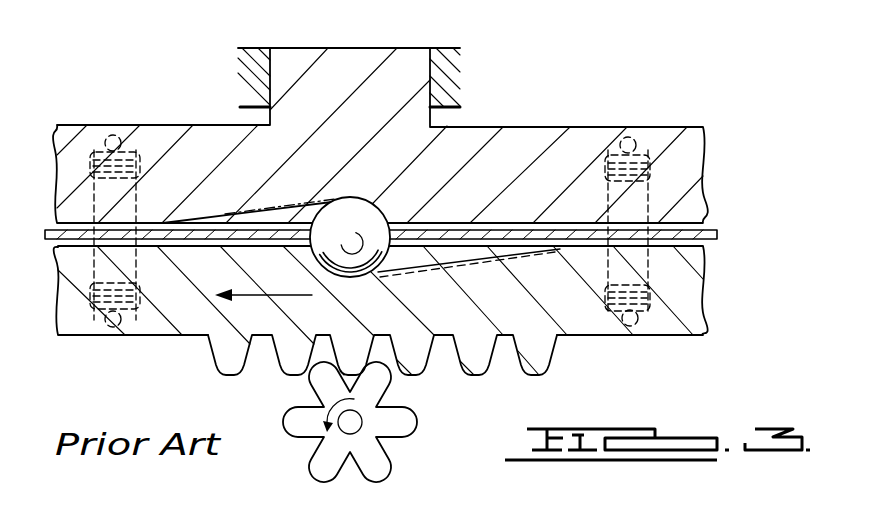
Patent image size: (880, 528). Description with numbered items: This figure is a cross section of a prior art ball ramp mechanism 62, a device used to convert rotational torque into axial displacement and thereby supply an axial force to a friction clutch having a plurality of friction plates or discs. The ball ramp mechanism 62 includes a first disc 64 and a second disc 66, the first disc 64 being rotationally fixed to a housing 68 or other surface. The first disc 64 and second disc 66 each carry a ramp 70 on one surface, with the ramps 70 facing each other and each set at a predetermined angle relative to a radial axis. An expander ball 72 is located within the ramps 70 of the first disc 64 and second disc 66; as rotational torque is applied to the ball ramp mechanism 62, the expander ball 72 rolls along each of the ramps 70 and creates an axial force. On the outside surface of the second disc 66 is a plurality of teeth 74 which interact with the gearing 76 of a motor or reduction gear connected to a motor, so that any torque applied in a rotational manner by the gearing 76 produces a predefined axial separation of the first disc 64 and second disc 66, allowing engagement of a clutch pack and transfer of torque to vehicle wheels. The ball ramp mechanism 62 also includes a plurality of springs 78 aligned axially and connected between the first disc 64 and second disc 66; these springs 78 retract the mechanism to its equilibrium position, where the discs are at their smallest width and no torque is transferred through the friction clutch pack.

The ball ramp mechanism 62 is at (129, 88).
The first disc 64 is at (690, 158).
The second disc 66 is at (690, 308).
The housing 68 is at (450, 62).
The ramp 70 is at (290, 212).
The expander ball 72 is at (366, 220).
The teeth 74 is at (480, 358).
The gearing 76 is at (383, 470).
The springs 78 is at (150, 147).